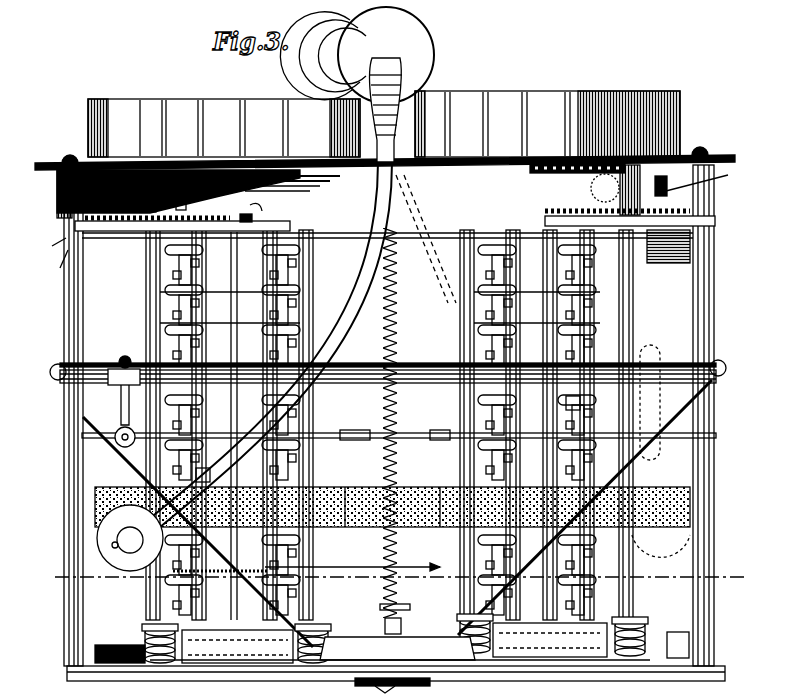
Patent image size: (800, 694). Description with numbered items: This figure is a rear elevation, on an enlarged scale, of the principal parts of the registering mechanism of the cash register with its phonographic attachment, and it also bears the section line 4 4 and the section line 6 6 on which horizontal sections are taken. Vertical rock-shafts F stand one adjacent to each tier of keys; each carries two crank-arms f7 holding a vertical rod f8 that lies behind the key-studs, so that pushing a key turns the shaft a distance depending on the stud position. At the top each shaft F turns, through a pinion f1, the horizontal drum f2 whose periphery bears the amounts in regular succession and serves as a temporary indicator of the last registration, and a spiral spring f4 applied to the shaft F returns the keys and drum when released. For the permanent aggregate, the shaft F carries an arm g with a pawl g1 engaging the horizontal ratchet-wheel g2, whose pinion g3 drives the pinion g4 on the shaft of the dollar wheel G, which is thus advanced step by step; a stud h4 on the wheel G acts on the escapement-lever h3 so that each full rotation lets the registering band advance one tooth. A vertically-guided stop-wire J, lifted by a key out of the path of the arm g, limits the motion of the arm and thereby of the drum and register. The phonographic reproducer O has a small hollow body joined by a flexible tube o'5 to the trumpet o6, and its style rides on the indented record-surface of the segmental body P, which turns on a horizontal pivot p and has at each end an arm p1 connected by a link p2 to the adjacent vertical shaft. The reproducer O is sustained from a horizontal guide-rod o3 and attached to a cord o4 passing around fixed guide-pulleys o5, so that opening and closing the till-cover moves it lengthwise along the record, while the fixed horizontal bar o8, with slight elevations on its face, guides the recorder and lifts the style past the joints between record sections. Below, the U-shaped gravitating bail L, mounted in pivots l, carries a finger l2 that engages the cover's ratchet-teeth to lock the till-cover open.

The vertical rock-shaft F is at (394, 423).
The section line 6 6 is at (36, 168).
The horizontal drum f2 is at (240, 99).
The trumpet o6 is at (436, 62).
The arm g is at (296, 200).
The pawl g1 is at (408, 204).
The wheel G is at (397, 194).
The pinion f1 is at (447, 181).
The horizontal ratchet-wheel g2 is at (716, 210).
The pinion g3 is at (354, 235).
The pinion g4 is at (341, 211).
The stud h4 is at (664, 184).
The escapement-lever h3 is at (703, 179).
The flexible tube o'5 is at (291, 354).
The finger l2 is at (404, 628).
The vertical rod f8 is at (380, 432).
The crank-arm f7 is at (150, 242).
The stop-wire J is at (347, 310).
The horizontal guide-rod o3 is at (388, 381).
The fixed horizontal bar o8 is at (348, 433).
The cord o4 is at (66, 398).
The fixed guide-pulley o5 is at (58, 364).
The segmental record body P is at (339, 490).
The horizontal pivot p is at (95, 531).
The arm p1 is at (226, 478).
The link p2 is at (566, 394).
The phonographic reproducer O is at (393, 458).
The section line 4 4 is at (395, 579).
The spiral spring f4 is at (155, 668).
The gravitating bail L is at (400, 658).
The pivot l is at (108, 655).